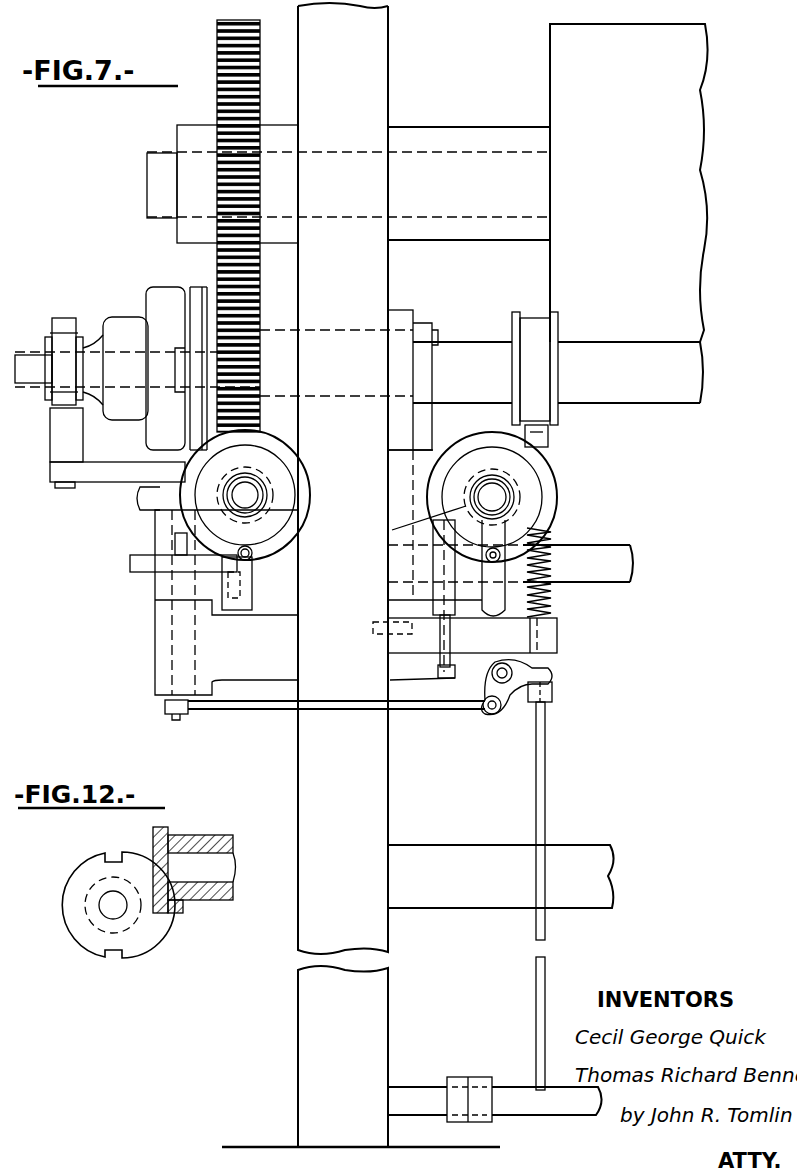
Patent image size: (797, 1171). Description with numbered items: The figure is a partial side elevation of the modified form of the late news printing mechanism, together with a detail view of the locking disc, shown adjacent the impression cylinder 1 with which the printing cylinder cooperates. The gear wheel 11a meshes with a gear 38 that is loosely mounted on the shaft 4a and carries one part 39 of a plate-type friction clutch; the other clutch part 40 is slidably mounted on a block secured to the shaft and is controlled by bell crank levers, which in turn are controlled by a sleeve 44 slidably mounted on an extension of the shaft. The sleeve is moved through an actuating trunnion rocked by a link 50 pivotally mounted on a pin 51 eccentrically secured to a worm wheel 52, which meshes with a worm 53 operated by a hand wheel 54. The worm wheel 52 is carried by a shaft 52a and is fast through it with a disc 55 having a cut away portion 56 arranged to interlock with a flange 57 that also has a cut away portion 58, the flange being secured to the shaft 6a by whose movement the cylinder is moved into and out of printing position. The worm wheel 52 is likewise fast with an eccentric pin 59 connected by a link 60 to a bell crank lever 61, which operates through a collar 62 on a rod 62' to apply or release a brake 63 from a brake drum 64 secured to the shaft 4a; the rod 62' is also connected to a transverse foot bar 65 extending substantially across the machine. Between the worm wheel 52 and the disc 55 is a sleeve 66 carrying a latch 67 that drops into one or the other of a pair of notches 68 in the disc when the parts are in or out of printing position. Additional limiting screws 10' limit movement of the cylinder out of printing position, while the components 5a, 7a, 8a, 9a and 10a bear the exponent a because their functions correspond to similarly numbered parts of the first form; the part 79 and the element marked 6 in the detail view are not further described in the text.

In FIG. 7, the impression cylinder 1 is at (635, 32).
In FIG. 7, the shaft 4a is at (610, 399).
In FIG. 7, the shaft 5a is at (332, 330).
In FIG. 7, the shaft 6a is at (579, 580).
In FIG. 7, the bearing plate 7a is at (434, 425).
In FIG. 7, the roller 8a is at (490, 428).
In FIG. 7, the roller hub 9a is at (516, 486).
In FIG. 7, the bracket 10a is at (454, 642).
In FIG. 7, the limiting screws 10' is at (373, 650).
In FIG. 7, the gear wheel 11a is at (264, 97).
In FIG. 7, the gear 38 is at (264, 422).
In FIG. 7, the friction clutch part 39 is at (207, 290).
In FIG. 7, the friction clutch part 40 is at (191, 290).
In FIG. 7, the sleeve 44 is at (118, 317).
In FIG. 7, the link 50 is at (126, 462).
In FIG. 7, the pin 51 is at (188, 459).
In FIG. 7, the worm wheel 52 is at (139, 496).
In FIG. 7, the shaft 52a is at (160, 636).
In FIG. 7, the worm 53 is at (267, 487).
In FIG. 7, the hand wheel 54 is at (311, 507).
In FIG. 7, the disc 55 is at (129, 562).
In FIG. 12, the disc 55 is at (62, 888).
In FIG. 12, the cut away portion 56 is at (149, 916).
In FIG. 7, the flange 57 is at (255, 608).
In FIG. 12, the flange 57 is at (186, 915).
In FIG. 12, the cut away portion 58 is at (161, 876).
In FIG. 7, the eccentric pin 59 is at (171, 719).
In FIG. 7, the link 60 is at (353, 713).
In FIG. 7, the bell crank lever 61 is at (481, 688).
In FIG. 7, the collar 62 is at (568, 689).
In FIG. 7, the rod 62' is at (568, 896).
In FIG. 7, the brake 63 is at (549, 438).
In FIG. 7, the brake drum 64 is at (535, 368).
In FIG. 7, the transverse foot bar 65 is at (495, 1099).
In FIG. 7, the sleeve 66 is at (153, 526).
In FIG. 7, the latch 67 is at (178, 556).
In FIG. 7, the notches 68 is at (193, 560).
In FIG. 12, the notches 68 is at (115, 855).
In FIG. 7, the nut 79 is at (73, 368).
In FIG. 12, the shaft 6 is at (202, 867).